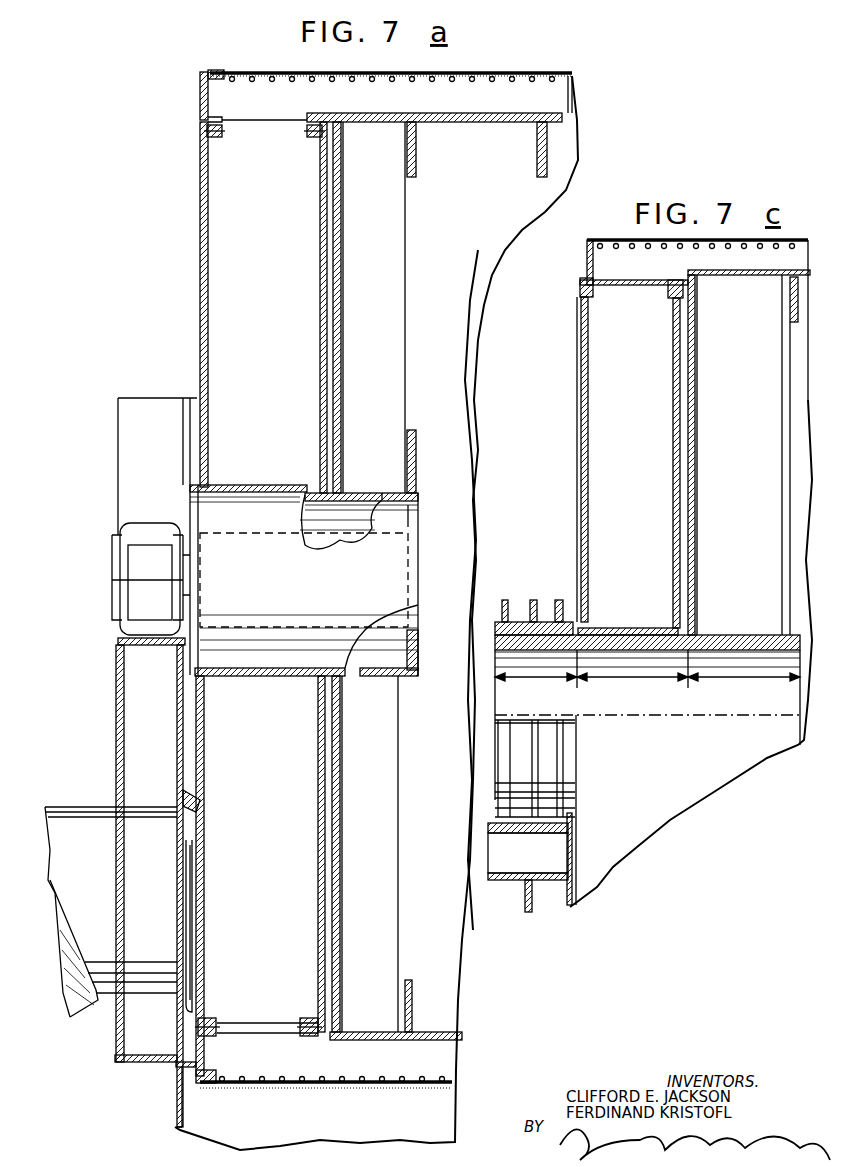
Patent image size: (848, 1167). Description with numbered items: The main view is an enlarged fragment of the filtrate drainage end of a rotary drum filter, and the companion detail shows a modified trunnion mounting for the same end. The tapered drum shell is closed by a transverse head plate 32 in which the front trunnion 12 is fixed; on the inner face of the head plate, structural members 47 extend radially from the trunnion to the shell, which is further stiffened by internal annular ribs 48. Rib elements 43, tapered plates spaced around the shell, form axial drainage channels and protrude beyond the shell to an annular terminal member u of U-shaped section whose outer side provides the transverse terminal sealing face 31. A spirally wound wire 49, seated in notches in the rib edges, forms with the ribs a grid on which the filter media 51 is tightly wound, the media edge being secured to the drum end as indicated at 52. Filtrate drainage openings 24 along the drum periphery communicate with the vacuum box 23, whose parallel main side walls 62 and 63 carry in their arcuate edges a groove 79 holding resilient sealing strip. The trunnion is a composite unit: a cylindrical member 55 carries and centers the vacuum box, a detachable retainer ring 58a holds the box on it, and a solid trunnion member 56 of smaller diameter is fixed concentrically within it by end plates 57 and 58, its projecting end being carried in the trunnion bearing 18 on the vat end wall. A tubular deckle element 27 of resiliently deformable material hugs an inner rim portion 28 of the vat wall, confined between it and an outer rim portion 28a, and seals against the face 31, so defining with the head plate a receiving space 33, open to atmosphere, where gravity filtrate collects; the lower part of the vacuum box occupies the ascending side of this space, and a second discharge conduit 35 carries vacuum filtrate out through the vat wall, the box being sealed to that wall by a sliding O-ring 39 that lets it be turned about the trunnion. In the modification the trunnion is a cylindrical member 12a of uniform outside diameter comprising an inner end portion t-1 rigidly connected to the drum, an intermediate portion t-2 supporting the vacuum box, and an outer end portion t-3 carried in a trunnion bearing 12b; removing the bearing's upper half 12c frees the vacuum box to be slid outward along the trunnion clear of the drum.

In FIG. 7a, the annular terminal member u is at (212, 70).
In FIG. 7a, the trunnion 12 is at (210, 505).
In FIG. 7c, the cylindrical trunnion member 12a is at (522, 652).
In FIG. 7c, the trunnion bearing 12b is at (498, 823).
In FIG. 7c, the upper half of bearing 12c is at (498, 628).
In FIG. 7a, the trunnion bearing 18 is at (138, 540).
In FIG. 7a, the vacuum box 23 is at (190, 265).
In FIG. 7c, the vacuum box 23 is at (598, 362).
In FIG. 7a, the filtrate drainage openings 24 is at (272, 121).
In FIG. 7a, the deckle element 27 is at (178, 1070).
In FIG. 7a, the inner rim portion 28 is at (190, 1052).
In FIG. 7a, the outer rim portion 28a is at (180, 1100).
In FIG. 7a, the terminal sealing face 31 is at (196, 1040).
In FIG. 7a, the head plate 32 is at (341, 300).
In FIG. 7a, the receiving space 33 is at (192, 708).
In FIG. 7a, the second discharge conduit means 35 is at (72, 817).
In FIG. 7a, the annular sealing member 39 is at (188, 792).
In FIG. 7a, the rib elements 43 is at (555, 96).
In FIG. 7a, the structural members 47 is at (384, 228).
In FIG. 7c, the structural members 47 is at (749, 452).
In FIG. 7a, the internal annular ribs 48 is at (535, 155).
In FIG. 7a, the wire 49 is at (432, 82).
In FIG. 7a, the filter media 51 is at (545, 76).
In FIG. 7c, the filter media 51 is at (630, 238).
In FIG. 7a, the filter media securing point 52 is at (208, 1084).
In FIG. 7a, the cylindrical member 55 is at (360, 494).
In FIG. 7a, the solid trunnion member 56 is at (320, 548).
In FIG. 7a, the end plate 57 is at (420, 515).
In FIG. 7a, the end plate 58 is at (200, 515).
In FIG. 7a, the retainer ring 58a is at (205, 500).
In FIG. 7a, the main side wall 62 is at (208, 220).
In FIG. 7a, the main side wall 63 is at (320, 255).
In FIG. 7a, the groove 79 is at (214, 138).
In FIG. 7c, the inner end portion t-1 is at (738, 677).
In FIG. 7c, the intermediate portion t-2 is at (641, 677).
In FIG. 7c, the outer end portion t-3 is at (545, 677).